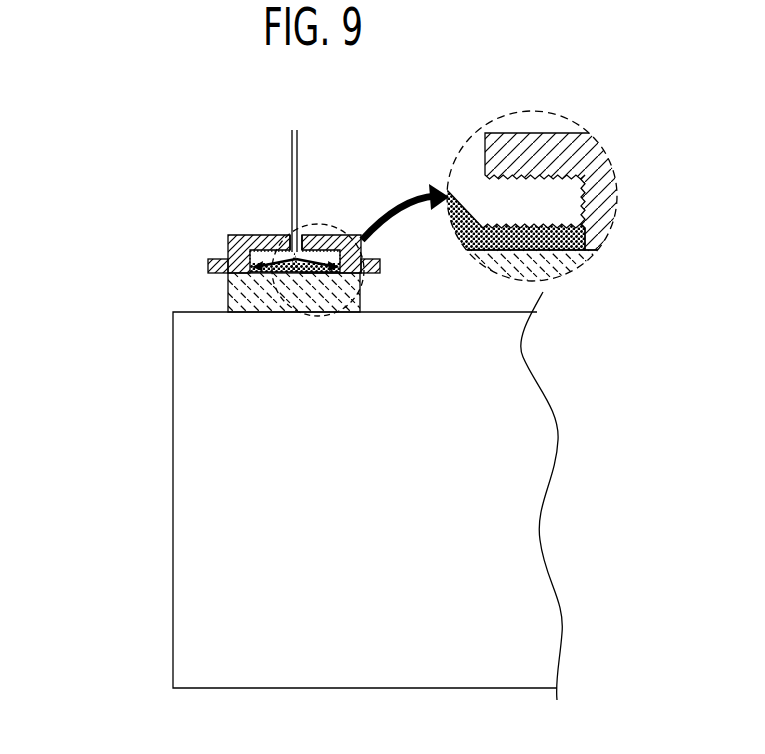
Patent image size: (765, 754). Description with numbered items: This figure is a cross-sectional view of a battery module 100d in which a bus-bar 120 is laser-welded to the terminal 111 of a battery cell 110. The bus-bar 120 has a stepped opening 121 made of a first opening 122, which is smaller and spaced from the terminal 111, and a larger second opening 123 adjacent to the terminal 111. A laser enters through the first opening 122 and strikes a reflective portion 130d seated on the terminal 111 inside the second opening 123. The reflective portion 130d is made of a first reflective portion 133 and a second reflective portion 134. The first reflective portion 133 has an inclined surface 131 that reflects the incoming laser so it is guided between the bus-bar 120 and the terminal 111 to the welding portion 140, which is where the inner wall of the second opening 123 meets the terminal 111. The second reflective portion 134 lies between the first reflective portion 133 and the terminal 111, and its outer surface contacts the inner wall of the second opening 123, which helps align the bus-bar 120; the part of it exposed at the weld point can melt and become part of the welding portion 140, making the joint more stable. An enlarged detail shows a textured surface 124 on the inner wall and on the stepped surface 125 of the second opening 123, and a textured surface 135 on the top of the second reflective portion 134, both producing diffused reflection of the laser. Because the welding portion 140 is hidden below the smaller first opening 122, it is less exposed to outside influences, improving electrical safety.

The battery module 100d is at (84, 161).
The battery cell 110 is at (152, 454).
The terminal 111 is at (233, 291).
The bus-bar 120 is at (295, 196).
The opening 121 is at (264, 196).
The first opening 122 is at (286, 236).
The second opening 123 is at (256, 236).
The textured surface 124 is at (552, 191).
The stepped surface 125 is at (528, 178).
The reflective portion 130d is at (287, 352).
The inclined surface 131 is at (310, 276).
The first reflective portion 133 is at (296, 273).
The second reflective portion 134 is at (284, 276).
The textured surface 135 is at (507, 220).
The welding portion 140 is at (209, 268).